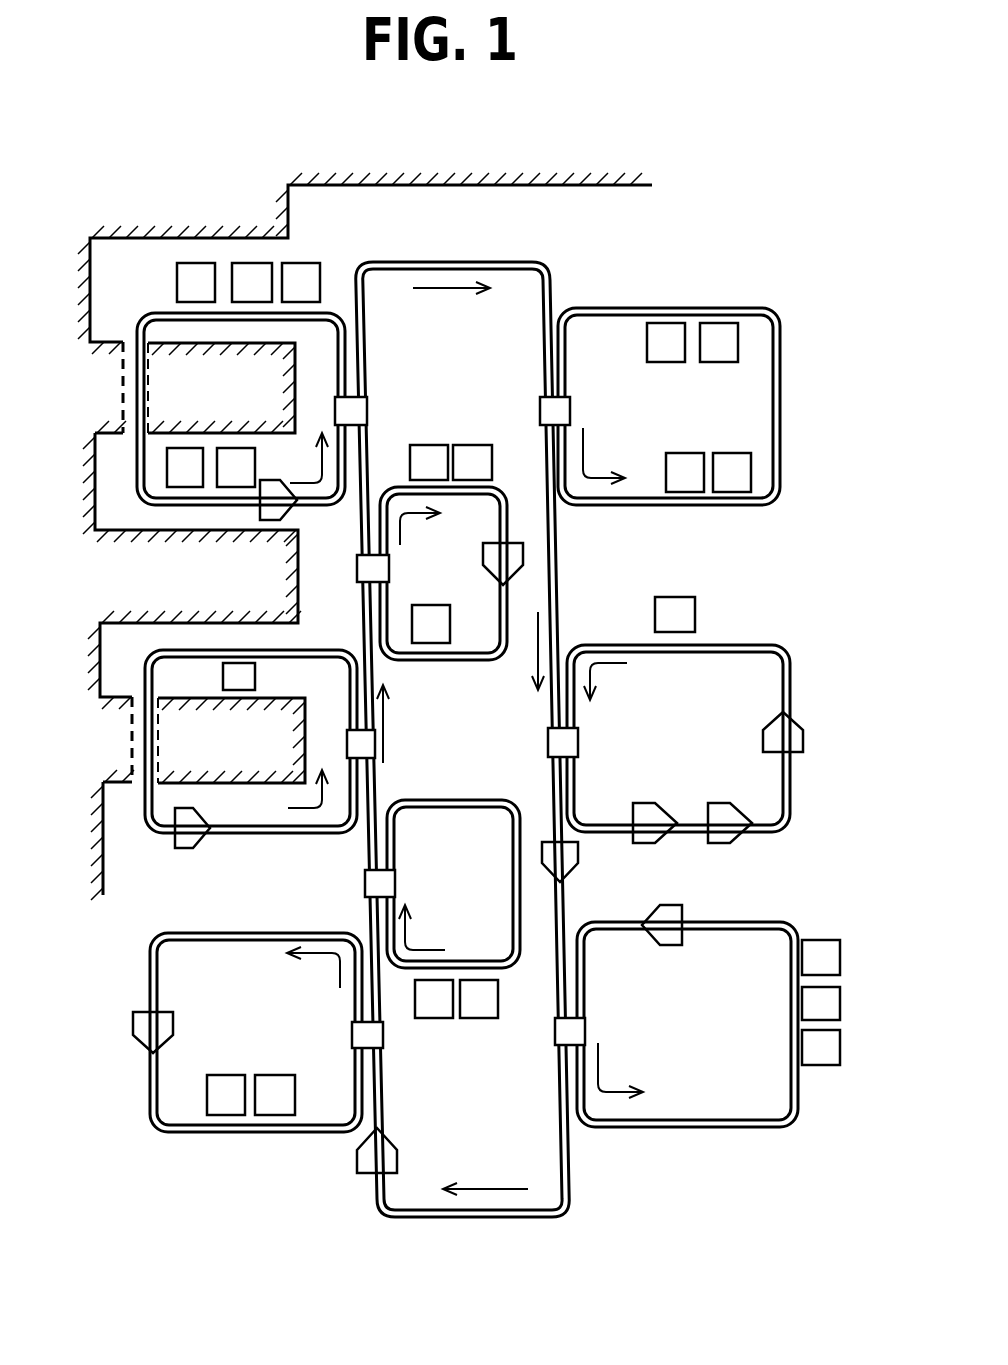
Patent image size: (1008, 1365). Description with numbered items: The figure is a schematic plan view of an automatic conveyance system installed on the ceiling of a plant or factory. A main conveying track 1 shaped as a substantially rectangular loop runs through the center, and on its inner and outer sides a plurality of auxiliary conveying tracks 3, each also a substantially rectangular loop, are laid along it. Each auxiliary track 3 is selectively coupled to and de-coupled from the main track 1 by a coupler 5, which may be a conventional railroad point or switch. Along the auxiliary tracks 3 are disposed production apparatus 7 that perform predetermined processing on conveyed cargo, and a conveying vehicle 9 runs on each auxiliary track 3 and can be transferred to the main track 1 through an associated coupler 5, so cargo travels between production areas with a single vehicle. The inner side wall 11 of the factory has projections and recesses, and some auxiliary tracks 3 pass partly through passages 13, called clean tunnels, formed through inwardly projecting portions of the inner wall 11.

The main conveying track 1 is at (555, 555).
The auxiliary conveying track 3 is at (150, 313).
The coupler 5 is at (367, 410).
The production apparatus 7 is at (300, 263).
The conveying vehicle 9 is at (297, 515).
The inner side wall 11 is at (538, 183).
The passage 13 is at (123, 380).